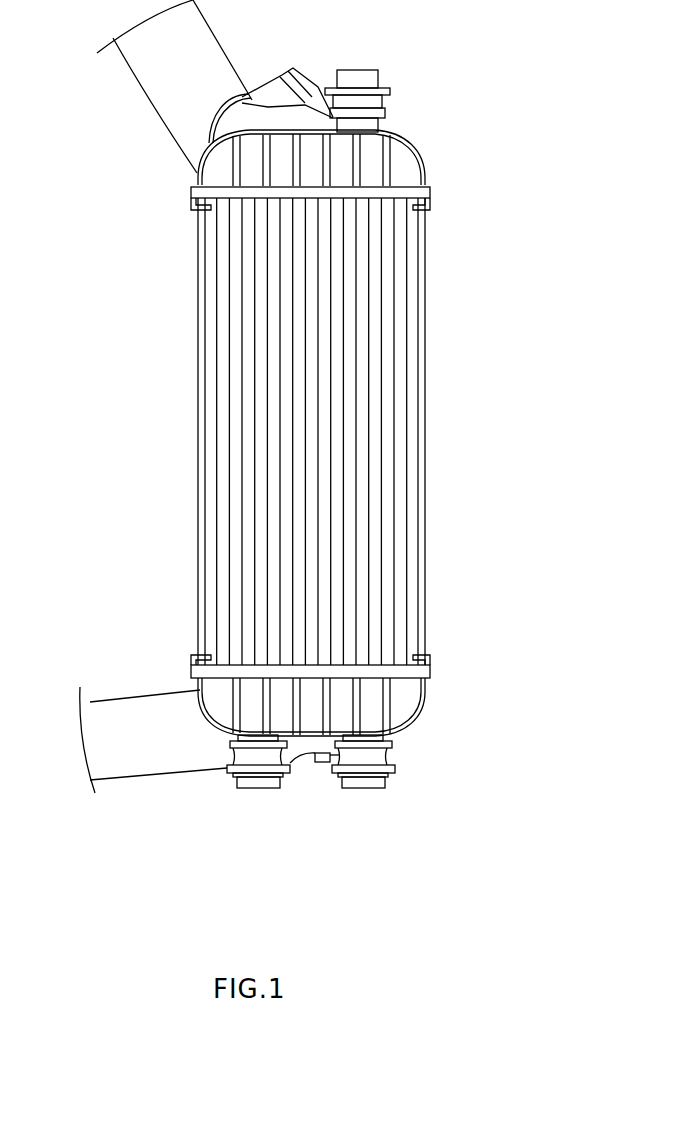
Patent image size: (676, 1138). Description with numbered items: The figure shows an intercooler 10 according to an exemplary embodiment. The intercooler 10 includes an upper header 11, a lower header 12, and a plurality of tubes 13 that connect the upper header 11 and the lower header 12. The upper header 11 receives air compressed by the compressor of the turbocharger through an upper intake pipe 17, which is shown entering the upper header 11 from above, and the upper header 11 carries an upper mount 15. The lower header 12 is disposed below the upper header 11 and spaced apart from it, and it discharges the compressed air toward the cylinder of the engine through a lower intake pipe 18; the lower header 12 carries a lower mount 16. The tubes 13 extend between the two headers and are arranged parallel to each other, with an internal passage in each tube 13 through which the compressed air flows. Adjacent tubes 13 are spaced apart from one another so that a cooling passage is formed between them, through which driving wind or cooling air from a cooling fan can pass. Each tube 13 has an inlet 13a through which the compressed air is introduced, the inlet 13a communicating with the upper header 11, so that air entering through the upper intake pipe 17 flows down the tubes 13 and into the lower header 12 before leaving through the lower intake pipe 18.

The intercooler 10 is at (467, 374).
The upper header 11 is at (405, 163).
The lower header 12 is at (405, 698).
The tubes 13 is at (223, 458).
The inlet 13a is at (405, 197).
The upper mount 15 is at (357, 77).
The lower mount 16 is at (258, 783).
The upper intake pipe 17 is at (203, 53).
The lower intake pipe 18 is at (157, 767).